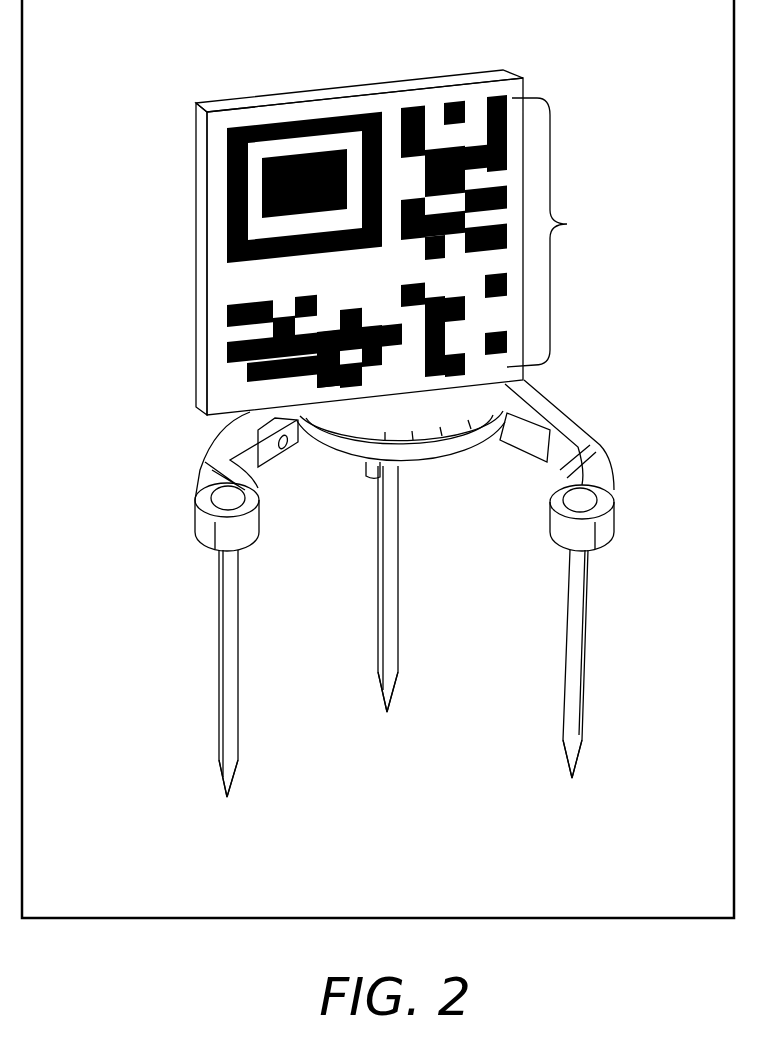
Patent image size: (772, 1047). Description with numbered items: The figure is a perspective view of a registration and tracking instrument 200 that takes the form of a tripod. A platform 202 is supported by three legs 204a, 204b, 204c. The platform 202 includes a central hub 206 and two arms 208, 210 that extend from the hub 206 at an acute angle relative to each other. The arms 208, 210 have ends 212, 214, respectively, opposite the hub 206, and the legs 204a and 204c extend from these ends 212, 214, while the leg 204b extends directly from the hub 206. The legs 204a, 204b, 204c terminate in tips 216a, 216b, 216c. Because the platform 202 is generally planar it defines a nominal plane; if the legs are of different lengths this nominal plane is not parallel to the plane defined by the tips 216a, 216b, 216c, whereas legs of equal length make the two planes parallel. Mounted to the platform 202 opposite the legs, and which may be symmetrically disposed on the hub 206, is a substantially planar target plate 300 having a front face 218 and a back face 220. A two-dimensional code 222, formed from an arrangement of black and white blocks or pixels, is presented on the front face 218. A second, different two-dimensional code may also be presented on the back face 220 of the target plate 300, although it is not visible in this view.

The registration and tracking instrument 200 is at (552, 83).
The platform 202 is at (570, 382).
The leg 204a is at (220, 640).
The leg 204b is at (378, 560).
The leg 204c is at (568, 623).
The central hub 206 is at (427, 464).
The arm 208 is at (205, 450).
The arm 210 is at (590, 428).
The end 212 is at (195, 532).
The end 214 is at (605, 545).
The tip 216a is at (223, 777).
The tip 216b is at (382, 693).
The tip 216c is at (570, 762).
The front face 218 is at (237, 295).
The back face 220 is at (195, 152).
The two-dimensional code 222 is at (568, 224).
The target plate 300 is at (378, 80).